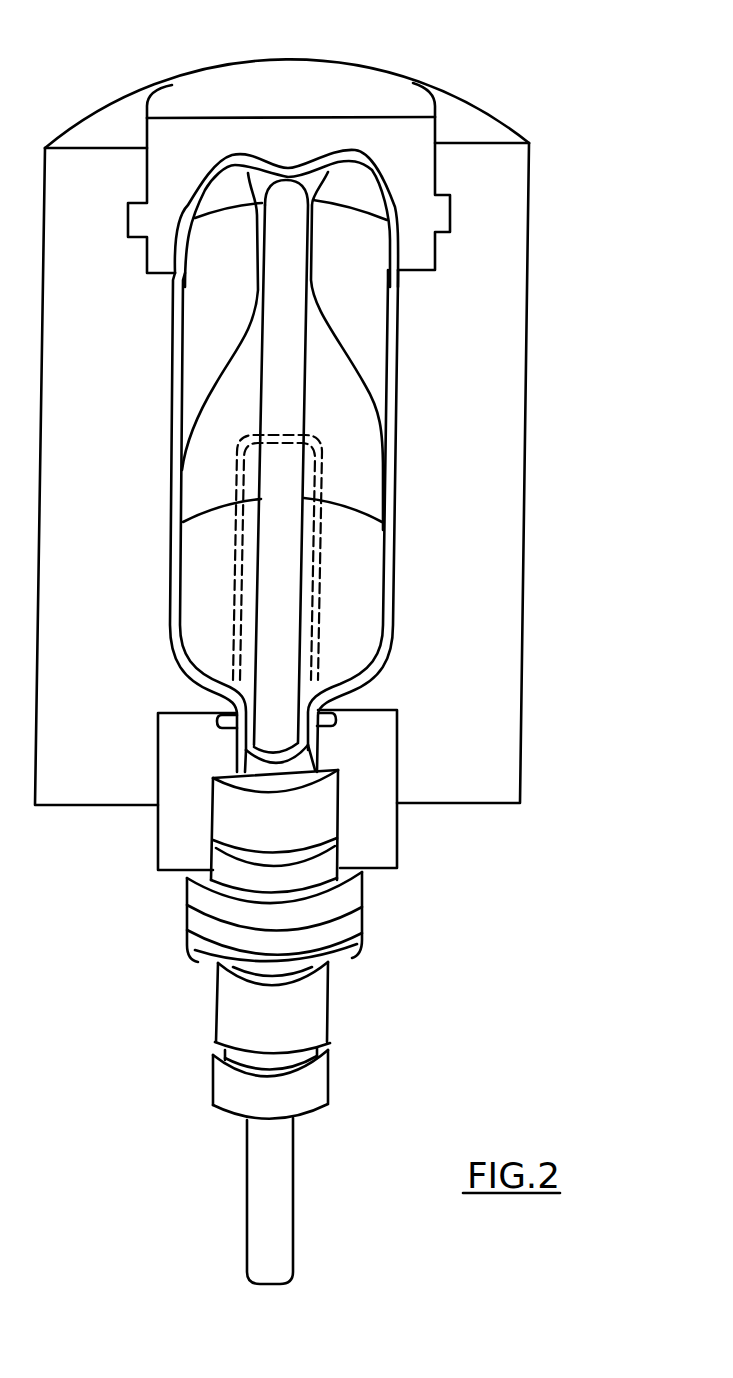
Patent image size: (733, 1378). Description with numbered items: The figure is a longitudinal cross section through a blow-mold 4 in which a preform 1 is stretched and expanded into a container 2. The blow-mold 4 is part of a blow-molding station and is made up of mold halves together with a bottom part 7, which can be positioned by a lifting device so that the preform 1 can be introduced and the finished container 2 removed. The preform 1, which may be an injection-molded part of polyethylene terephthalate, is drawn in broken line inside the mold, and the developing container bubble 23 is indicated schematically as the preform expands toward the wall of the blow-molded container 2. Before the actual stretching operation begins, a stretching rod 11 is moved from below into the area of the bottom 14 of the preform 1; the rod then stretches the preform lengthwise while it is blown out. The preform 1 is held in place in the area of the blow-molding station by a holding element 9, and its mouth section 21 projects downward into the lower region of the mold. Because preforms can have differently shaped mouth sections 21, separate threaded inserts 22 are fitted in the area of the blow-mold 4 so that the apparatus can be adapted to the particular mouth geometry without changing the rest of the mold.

The bottom part 7 is at (373, 80).
The blow-mold 4 is at (483, 442).
The container 2 is at (393, 377).
The container bubble 23 is at (337, 334).
The bottom 14 is at (313, 437).
The preform 1 is at (317, 598).
The mouth section 21 is at (320, 738).
The threaded insert 22 is at (380, 828).
The holding element 9 is at (347, 940).
The stretching rod 11 is at (245, 1213).